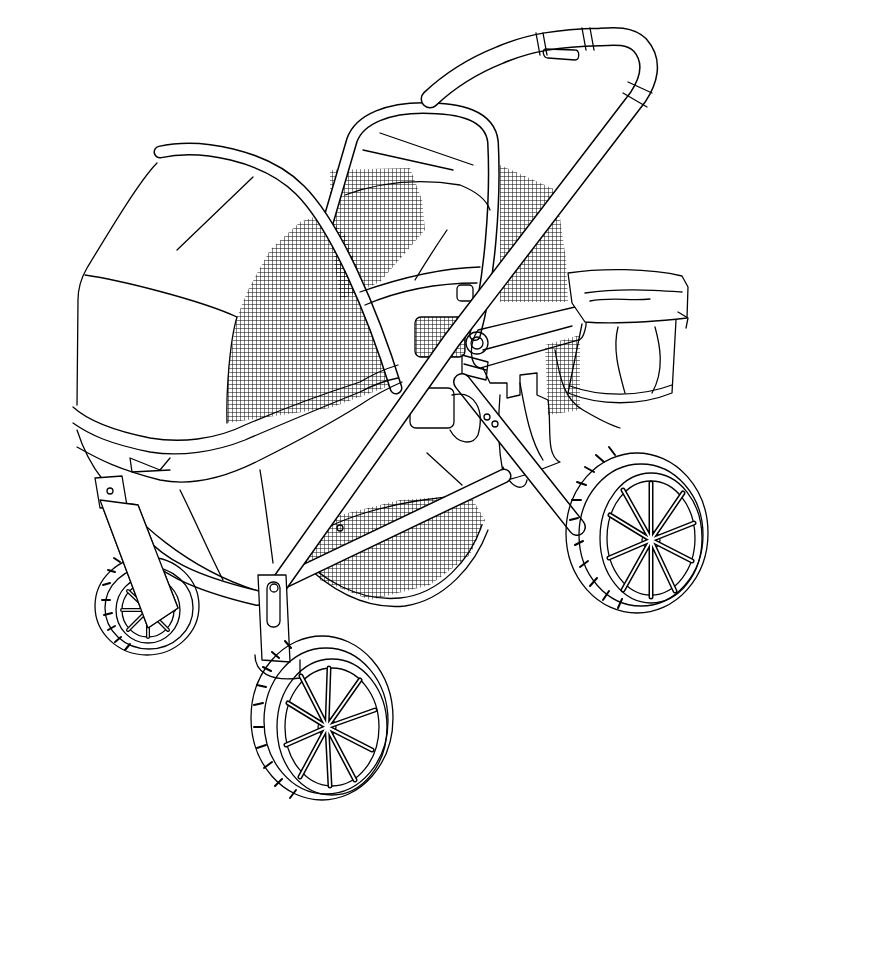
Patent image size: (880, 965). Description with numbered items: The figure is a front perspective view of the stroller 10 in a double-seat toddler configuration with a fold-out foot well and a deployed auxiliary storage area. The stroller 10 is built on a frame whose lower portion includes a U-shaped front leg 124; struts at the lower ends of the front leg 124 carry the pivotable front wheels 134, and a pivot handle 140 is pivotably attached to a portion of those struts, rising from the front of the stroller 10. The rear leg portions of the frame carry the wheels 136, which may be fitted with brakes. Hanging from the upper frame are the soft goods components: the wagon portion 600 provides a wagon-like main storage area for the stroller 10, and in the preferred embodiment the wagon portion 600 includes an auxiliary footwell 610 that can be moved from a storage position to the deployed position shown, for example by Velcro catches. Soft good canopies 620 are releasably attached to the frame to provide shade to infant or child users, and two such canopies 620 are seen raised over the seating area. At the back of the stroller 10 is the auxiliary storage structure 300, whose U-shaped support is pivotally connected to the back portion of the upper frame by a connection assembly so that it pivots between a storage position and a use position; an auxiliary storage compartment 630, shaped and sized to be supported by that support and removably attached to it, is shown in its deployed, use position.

The stroller 10 is at (280, 94).
The front leg 124 is at (417, 567).
The front wheels 134 is at (377, 763).
The wheels 136 is at (680, 593).
The pivot handle 140 is at (607, 153).
The auxiliary storage structure 300 is at (672, 262).
The wagon portion 600 is at (550, 423).
The auxiliary footwell 610 is at (437, 577).
The canopies 620 is at (117, 230).
The auxiliary storage compartment 630 is at (673, 350).